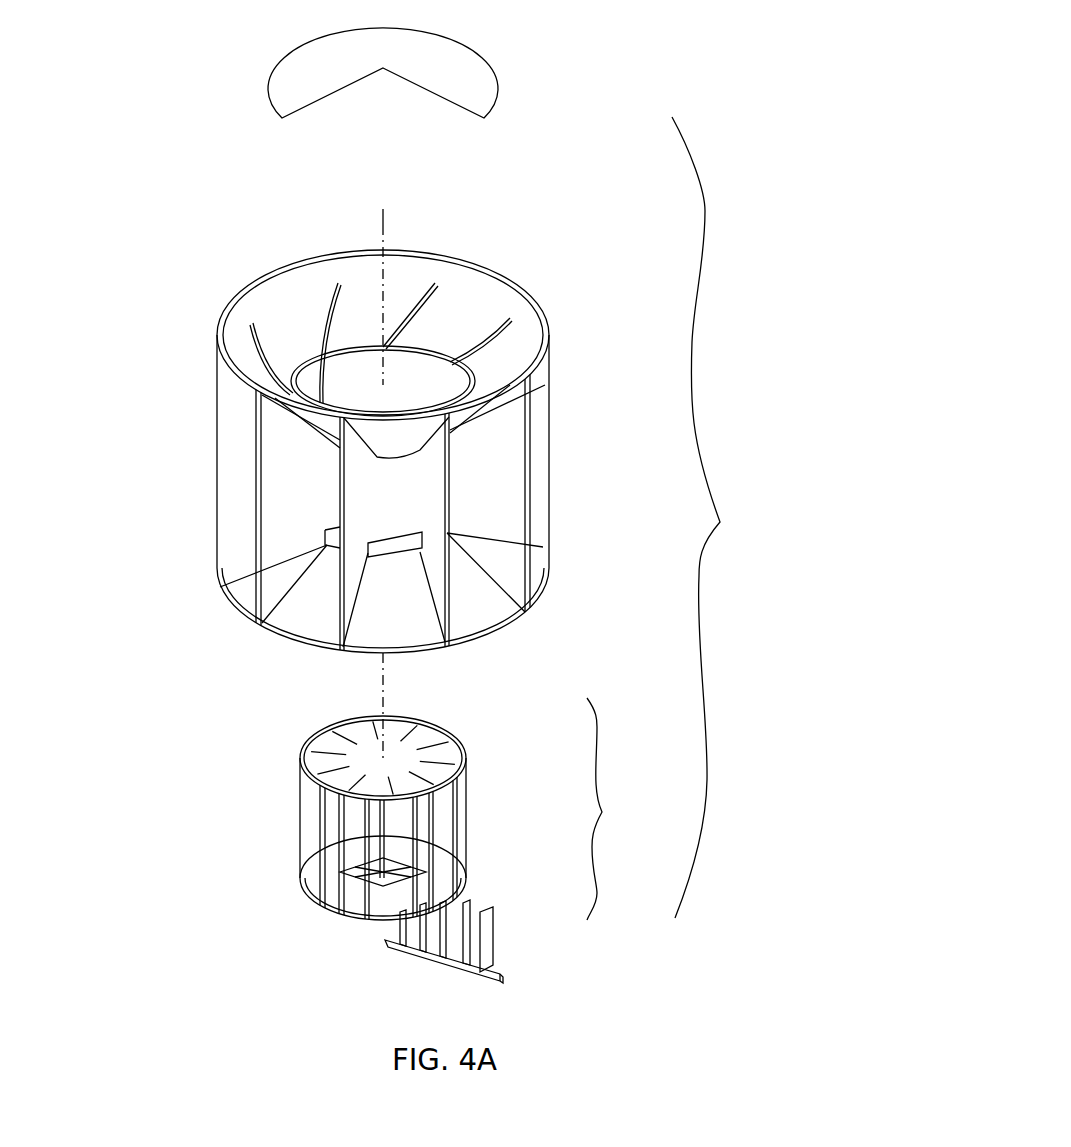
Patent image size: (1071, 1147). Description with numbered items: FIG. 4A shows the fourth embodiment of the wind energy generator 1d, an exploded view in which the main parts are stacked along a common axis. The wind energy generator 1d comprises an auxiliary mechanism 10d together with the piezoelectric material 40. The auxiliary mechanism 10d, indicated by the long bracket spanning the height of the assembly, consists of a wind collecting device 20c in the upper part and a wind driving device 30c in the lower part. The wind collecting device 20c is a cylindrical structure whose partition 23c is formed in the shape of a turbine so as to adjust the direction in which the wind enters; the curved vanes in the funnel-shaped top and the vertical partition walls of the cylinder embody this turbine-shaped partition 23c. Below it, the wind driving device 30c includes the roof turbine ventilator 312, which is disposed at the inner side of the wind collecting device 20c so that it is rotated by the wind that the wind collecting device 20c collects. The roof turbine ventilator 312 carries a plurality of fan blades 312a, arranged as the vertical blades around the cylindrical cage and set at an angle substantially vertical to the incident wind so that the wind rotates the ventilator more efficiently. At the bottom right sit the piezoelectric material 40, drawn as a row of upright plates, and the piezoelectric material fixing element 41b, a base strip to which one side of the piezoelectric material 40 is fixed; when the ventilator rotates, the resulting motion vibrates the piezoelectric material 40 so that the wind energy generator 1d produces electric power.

The wind energy generator 1d is at (585, 61).
The auxiliary mechanism 10d is at (720, 517).
The wind collecting device 20c is at (185, 271).
The partition 23c is at (293, 533).
The wind driving device 30c is at (623, 809).
The roof turbine ventilator 312 is at (261, 735).
The fan blades 312a is at (330, 850).
The piezoelectric material 40 is at (488, 937).
The piezoelectric material fixing element 41b is at (505, 975).